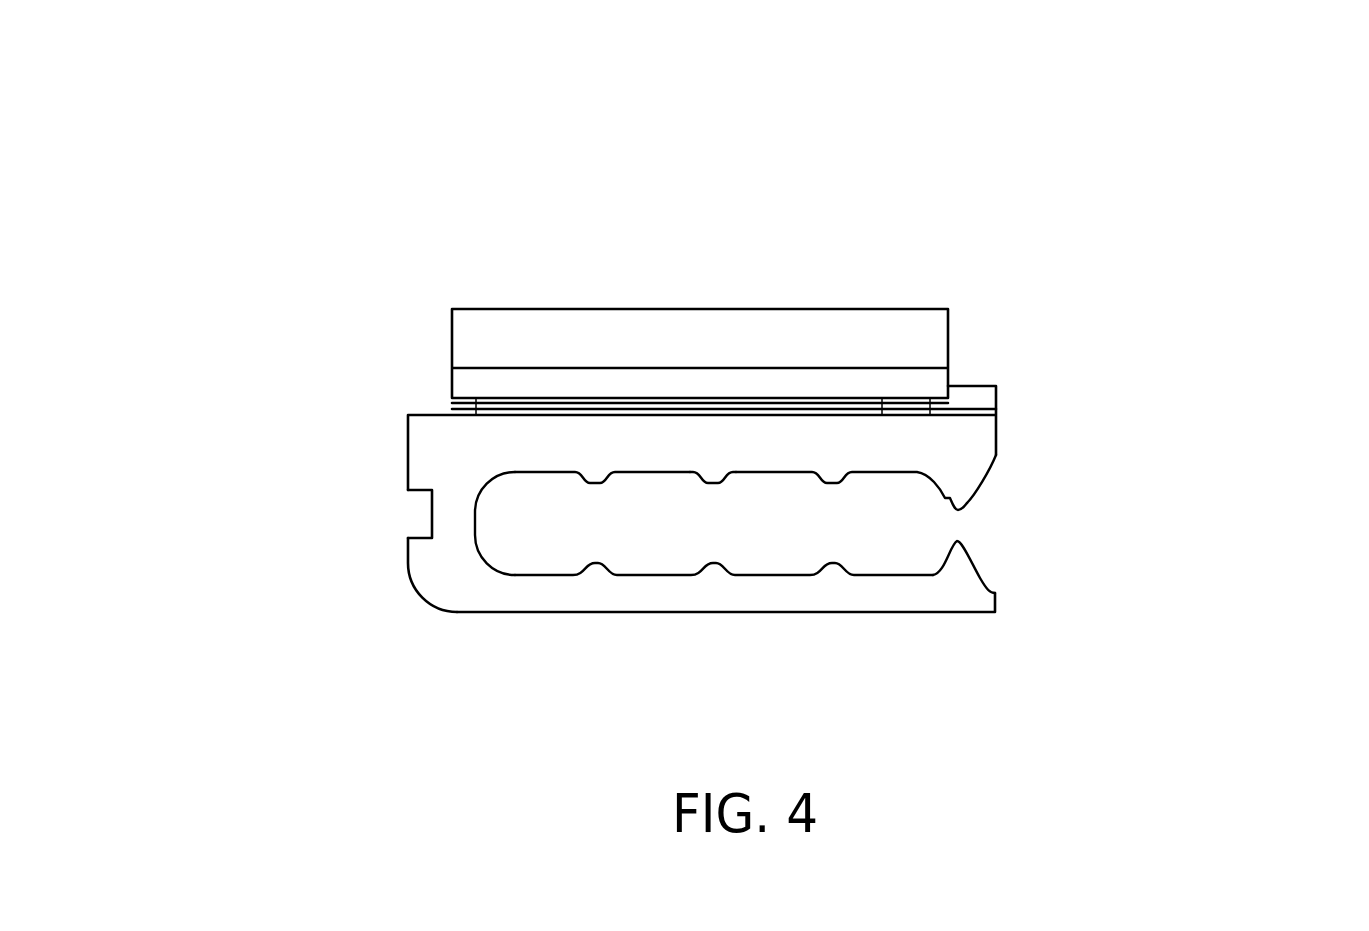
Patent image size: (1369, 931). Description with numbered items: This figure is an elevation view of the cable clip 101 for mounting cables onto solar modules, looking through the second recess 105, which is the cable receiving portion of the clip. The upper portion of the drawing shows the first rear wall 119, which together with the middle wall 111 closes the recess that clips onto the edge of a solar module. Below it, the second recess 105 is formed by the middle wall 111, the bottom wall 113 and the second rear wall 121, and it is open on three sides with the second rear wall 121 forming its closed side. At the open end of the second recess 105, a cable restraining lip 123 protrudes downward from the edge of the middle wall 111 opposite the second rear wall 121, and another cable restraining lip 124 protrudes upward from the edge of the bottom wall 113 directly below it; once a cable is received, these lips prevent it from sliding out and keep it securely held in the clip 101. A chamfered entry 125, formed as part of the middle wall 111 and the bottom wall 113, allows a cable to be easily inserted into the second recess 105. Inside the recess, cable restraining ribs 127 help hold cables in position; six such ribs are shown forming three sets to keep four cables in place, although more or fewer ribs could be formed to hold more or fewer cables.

The cable clip 101 is at (690, 230).
The first rear wall 119 is at (783, 343).
The middle wall 111 is at (600, 452).
The second rear wall 121 is at (453, 515).
The bottom wall 113 is at (555, 597).
The cable restraining lip 123 is at (945, 498).
The cable restraining ribs 127 is at (713, 475).
The chamfered entry 125 is at (983, 478).
The cable restraining lip 124 is at (957, 555).
The second recess 105 is at (956, 527).